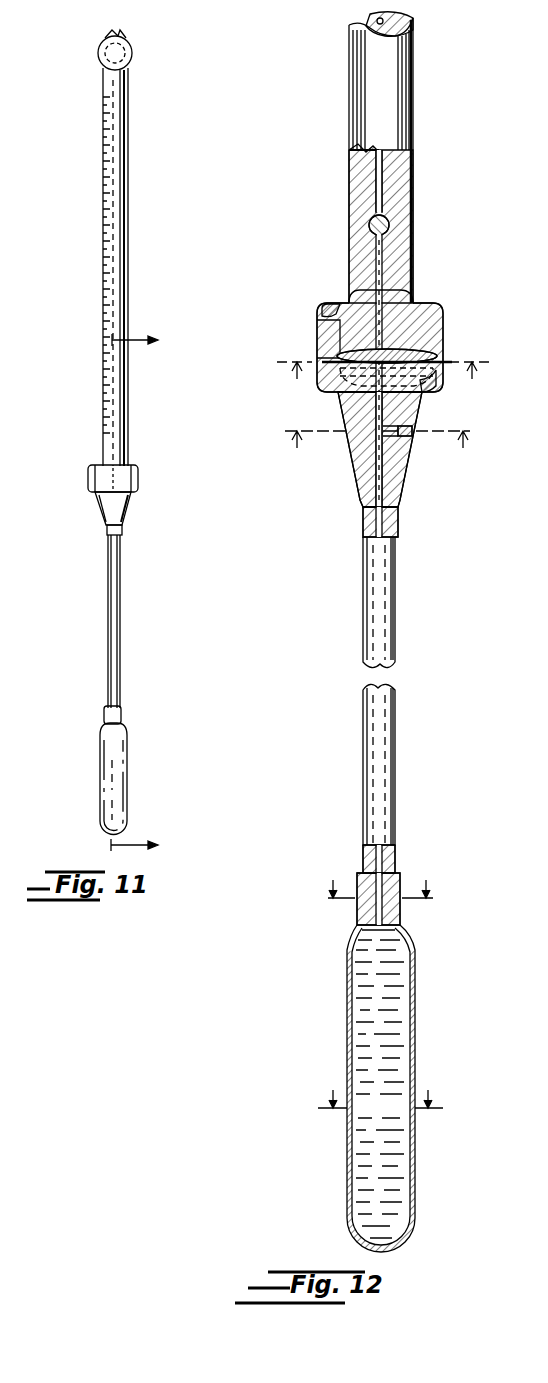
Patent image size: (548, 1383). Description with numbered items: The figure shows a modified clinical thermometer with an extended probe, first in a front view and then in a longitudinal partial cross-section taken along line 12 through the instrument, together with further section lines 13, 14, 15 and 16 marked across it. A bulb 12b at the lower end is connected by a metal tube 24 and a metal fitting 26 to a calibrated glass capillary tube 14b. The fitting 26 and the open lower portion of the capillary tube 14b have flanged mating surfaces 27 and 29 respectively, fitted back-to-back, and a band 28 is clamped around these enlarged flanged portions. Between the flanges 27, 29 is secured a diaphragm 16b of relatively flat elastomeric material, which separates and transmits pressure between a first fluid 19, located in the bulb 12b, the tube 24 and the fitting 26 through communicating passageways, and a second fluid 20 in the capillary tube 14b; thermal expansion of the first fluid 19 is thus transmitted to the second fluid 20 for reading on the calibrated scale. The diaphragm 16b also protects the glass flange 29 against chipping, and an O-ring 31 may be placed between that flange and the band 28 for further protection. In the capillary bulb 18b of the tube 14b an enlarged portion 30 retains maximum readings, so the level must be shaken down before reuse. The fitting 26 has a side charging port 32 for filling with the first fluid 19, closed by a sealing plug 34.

In FIG. 11, the section line 12— 12 is at (135, 583).
In FIG. 11, the bulb 12b is at (127, 752).
In FIG. 12, the bulb 12b is at (412, 1024).
In FIG. 12, the section line 13- 13 is at (382, 375).
In FIG. 12, the section line 14- 14 is at (382, 446).
In FIG. 11, the calibrated glass capillary tube 14b is at (128, 234).
In FIG. 12, the calibrated glass capillary tube 14b is at (413, 145).
In FIG. 12, the section line 15- 15 is at (379, 899).
In FIG. 12, the section line 16- 16 is at (380, 1097).
In FIG. 12, the diaphragm 16b is at (420, 352).
In FIG. 12, the capillary bulb 18b is at (383, 177).
In FIG. 12, the first fluid 19 is at (395, 985).
In FIG. 12, the second fluid 20 is at (383, 278).
In FIG. 11, the metal tube 24 is at (120, 630).
In FIG. 12, the metal tube 24 is at (396, 586).
In FIG. 11, the metal fitting 26 is at (124, 508).
In FIG. 12, the metal fitting 26 is at (340, 408).
In FIG. 12, the flanged mating surface of fitting 27 is at (437, 386).
In FIG. 11, the band 28 is at (138, 483).
In FIG. 12, the band 28 is at (443, 320).
In FIG. 12, the flanged mating surface of tube 29 is at (317, 330).
In FIG. 12, the enlarged portion 30 is at (389, 222).
In FIG. 12, the O-ring 31 is at (322, 310).
In FIG. 12, the side charging port 32 is at (397, 440).
In FIG. 12, the sealing plug 34 is at (412, 436).